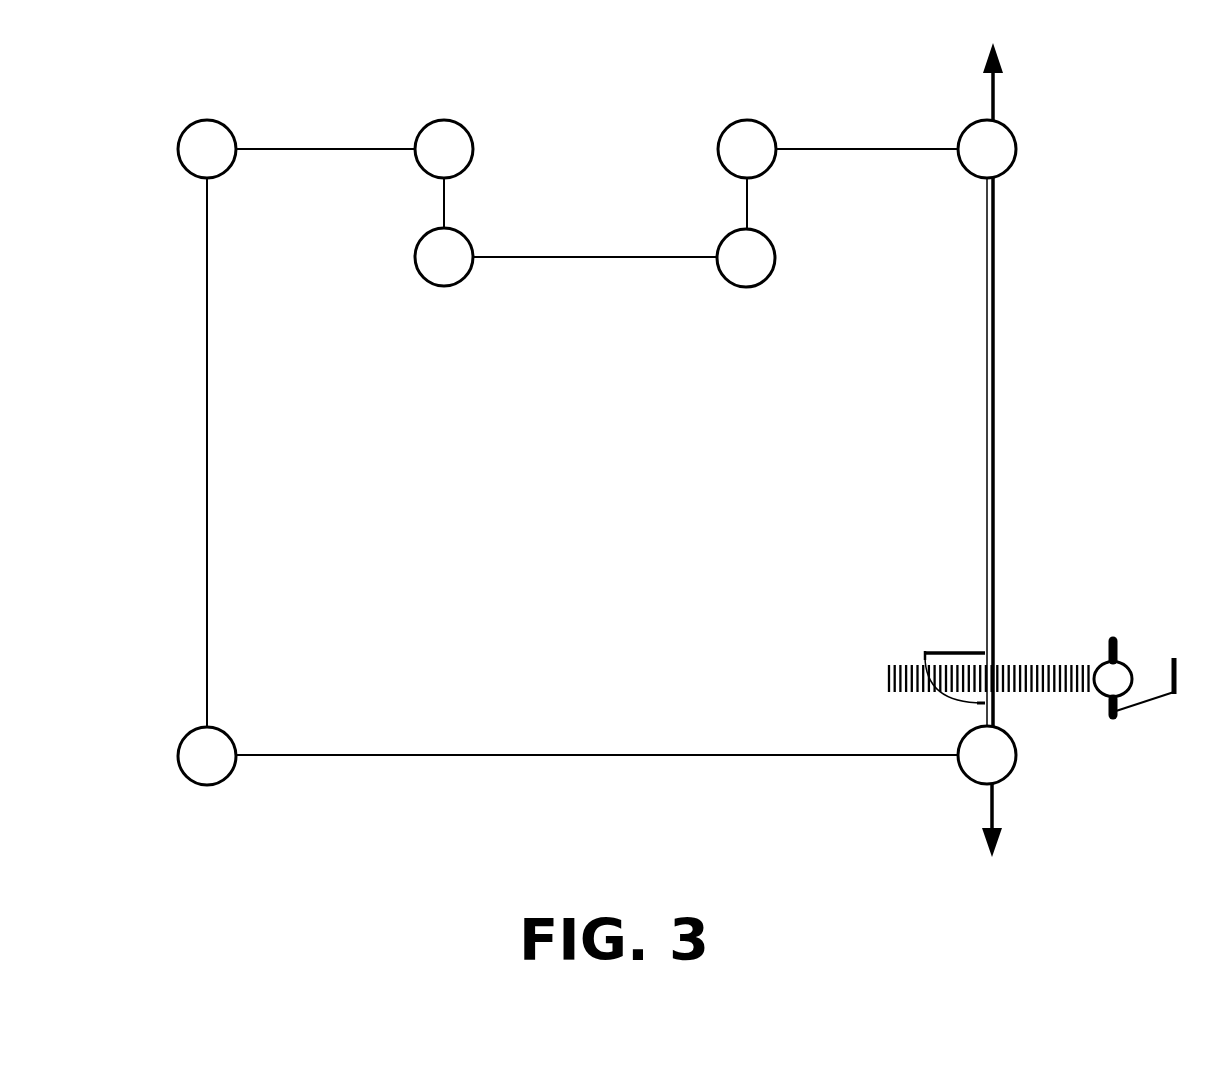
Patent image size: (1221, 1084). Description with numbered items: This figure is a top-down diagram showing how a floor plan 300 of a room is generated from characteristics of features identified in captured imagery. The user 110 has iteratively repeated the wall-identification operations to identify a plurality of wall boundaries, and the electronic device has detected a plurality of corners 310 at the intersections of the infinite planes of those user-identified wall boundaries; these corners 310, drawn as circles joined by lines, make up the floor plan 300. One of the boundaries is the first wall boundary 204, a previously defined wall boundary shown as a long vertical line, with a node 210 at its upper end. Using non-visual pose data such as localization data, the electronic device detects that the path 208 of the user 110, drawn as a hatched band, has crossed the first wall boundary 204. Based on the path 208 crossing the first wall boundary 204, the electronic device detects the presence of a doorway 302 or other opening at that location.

The floor plan 300 is at (1191, 72).
The corners 310 is at (184, 128).
The node 210 is at (1008, 170).
The first wall boundary 204 is at (995, 540).
The doorway 302 is at (940, 652).
The path 208 is at (889, 683).
The user 110 is at (1118, 718).